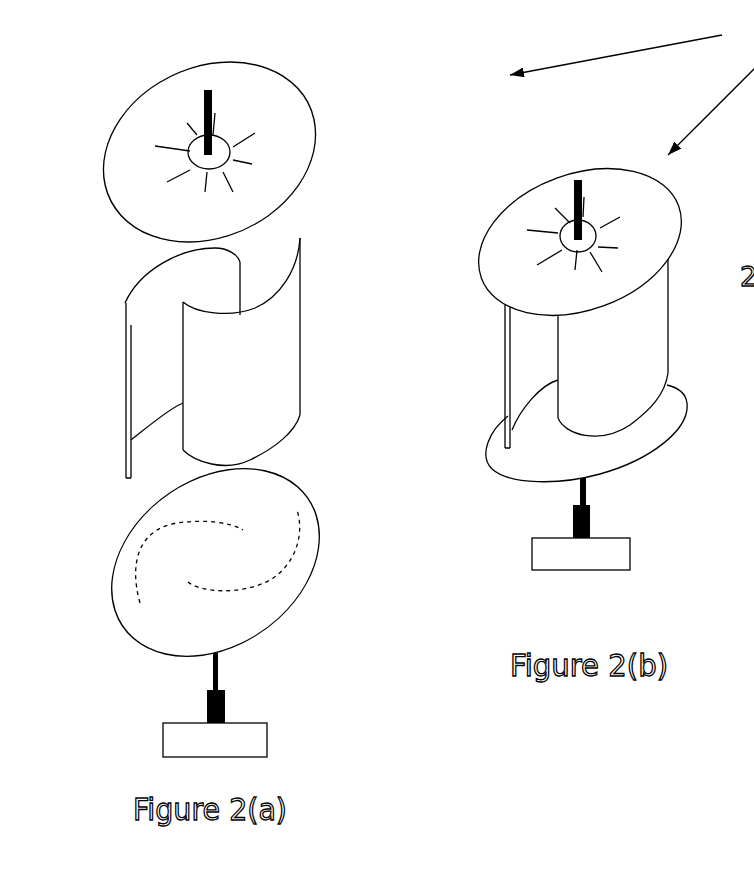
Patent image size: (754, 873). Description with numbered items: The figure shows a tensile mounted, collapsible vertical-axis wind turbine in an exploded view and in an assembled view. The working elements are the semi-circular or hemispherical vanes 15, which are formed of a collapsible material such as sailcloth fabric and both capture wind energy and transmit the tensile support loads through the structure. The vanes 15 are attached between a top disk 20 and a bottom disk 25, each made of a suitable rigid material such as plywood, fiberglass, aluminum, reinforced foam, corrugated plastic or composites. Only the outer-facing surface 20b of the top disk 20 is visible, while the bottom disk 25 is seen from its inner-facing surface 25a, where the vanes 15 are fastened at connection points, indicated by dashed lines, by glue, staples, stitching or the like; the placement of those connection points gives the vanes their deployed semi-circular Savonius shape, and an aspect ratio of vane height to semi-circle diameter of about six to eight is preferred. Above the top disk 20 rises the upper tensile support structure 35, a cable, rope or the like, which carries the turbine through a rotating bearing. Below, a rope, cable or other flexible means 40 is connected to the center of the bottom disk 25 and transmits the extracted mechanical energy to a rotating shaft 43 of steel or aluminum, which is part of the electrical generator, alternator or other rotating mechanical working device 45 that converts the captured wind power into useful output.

In FIG. 2A, the vanes 15 is at (304, 418).
In FIG. 2B, the vanes 15 is at (505, 360).
In FIG. 2A, the top disk 20 is at (318, 128).
In FIG. 2B, the top disk 20 is at (518, 190).
In FIG. 2A, the outer-facing surface 20b is at (255, 89).
In FIG. 2A, the bottom disk 25 is at (328, 545).
In FIG. 2B, the bottom disk 25 is at (500, 467).
In FIG. 2A, the inner-facing surface 25a is at (142, 535).
In FIG. 2A, the upper tensile support structure 35 is at (203, 107).
In FIG. 2A, the flexible means 40 is at (212, 667).
In FIG. 2B, the flexible means 40 is at (588, 485).
In FIG. 2A, the rotating shaft 43 is at (226, 702).
In FIG. 2B, the rotating shaft 43 is at (591, 522).
In FIG. 2A, the rotating mechanical working device 45 is at (268, 742).
In FIG. 2B, the rotating mechanical working device 45 is at (632, 556).